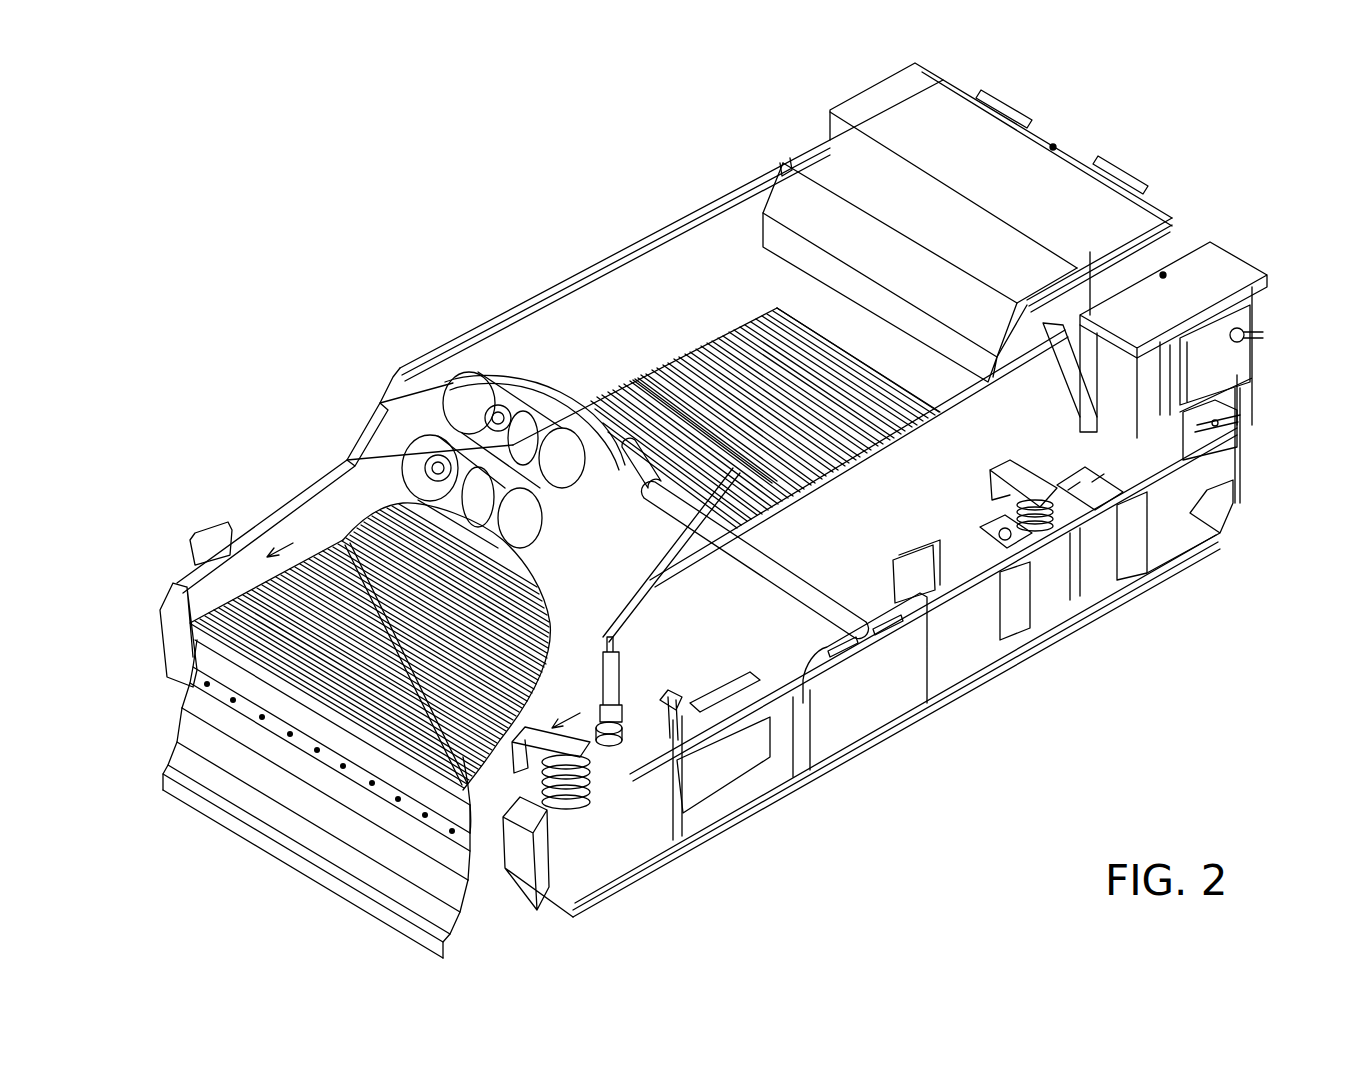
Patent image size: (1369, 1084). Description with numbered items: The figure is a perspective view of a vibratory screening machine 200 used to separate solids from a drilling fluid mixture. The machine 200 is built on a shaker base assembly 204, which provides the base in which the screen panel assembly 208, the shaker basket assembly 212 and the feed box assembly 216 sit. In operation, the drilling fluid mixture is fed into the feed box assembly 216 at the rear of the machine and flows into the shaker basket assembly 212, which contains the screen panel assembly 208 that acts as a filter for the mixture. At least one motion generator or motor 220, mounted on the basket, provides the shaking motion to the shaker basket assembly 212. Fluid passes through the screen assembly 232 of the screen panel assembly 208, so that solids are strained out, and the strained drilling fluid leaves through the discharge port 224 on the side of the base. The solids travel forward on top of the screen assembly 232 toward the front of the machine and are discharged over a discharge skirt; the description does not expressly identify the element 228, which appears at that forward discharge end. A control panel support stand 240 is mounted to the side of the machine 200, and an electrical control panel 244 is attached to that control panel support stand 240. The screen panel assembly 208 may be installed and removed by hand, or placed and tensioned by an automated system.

The vibratory screening machine 200 is at (423, 198).
The shaker base assembly 204 is at (1103, 582).
The screen panel assembly 208 is at (230, 607).
The shaker basket assembly 212 is at (590, 323).
The feed box assembly 216 is at (920, 137).
The motion generator or motor 220 is at (463, 390).
The discharge port 224 is at (878, 690).
The discharge chute 228 is at (207, 773).
The screen assembly 232 is at (667, 363).
The control panel support stand 240 is at (1185, 290).
The electrical control panel 244 is at (1213, 367).